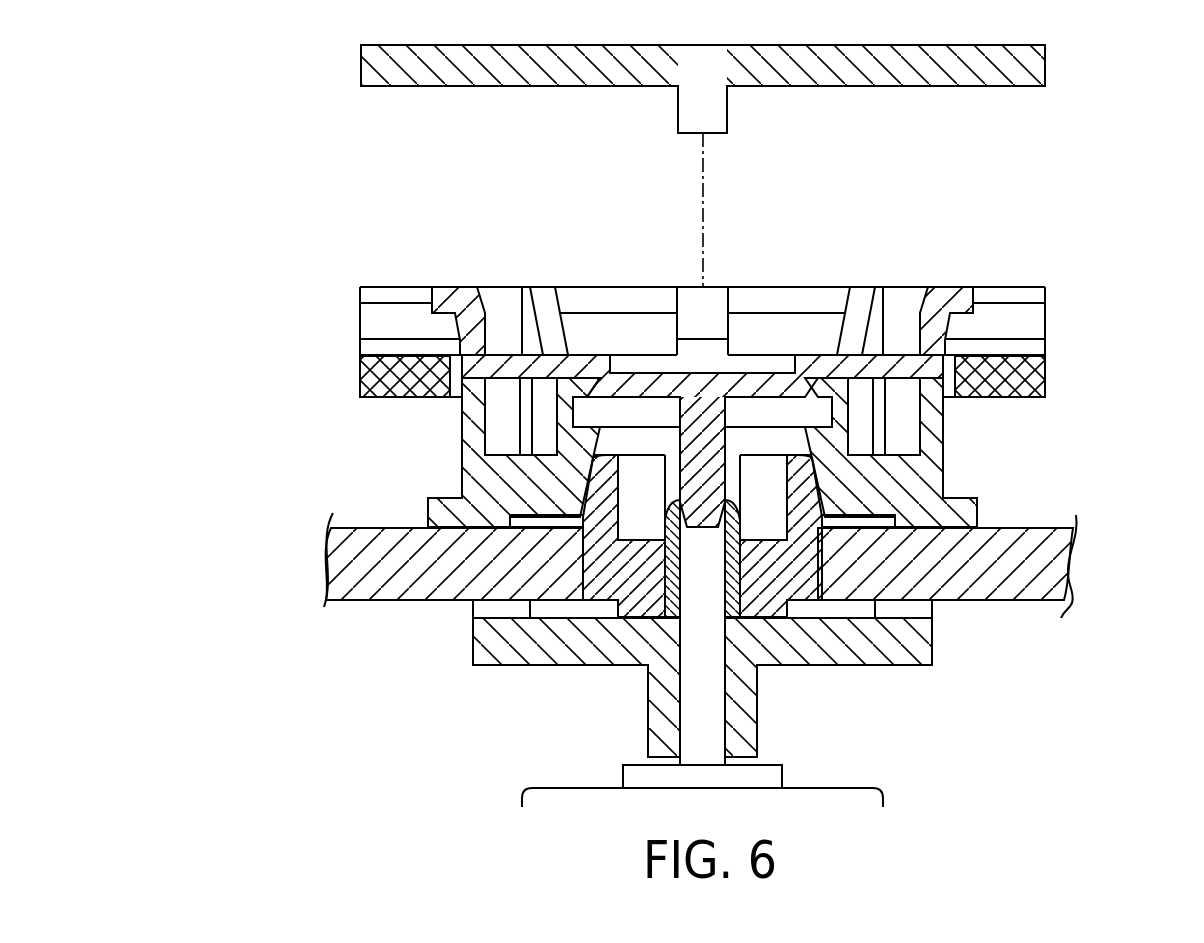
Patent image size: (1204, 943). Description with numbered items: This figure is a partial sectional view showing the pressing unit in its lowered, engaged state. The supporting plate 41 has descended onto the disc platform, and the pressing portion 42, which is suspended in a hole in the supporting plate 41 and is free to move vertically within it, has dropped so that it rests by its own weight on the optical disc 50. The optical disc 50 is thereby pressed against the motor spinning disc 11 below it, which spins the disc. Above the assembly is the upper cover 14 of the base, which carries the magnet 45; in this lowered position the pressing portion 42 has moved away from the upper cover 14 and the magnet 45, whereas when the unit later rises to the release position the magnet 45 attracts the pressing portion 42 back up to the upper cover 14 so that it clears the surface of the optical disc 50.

The upper cover 14 is at (1022, 62).
The supporting plate 41 is at (1029, 323).
The pressing portion 42 is at (945, 452).
The magnet 45 is at (768, 412).
The motor spinning disc 11 is at (594, 459).
The optical disc 50 is at (338, 577).